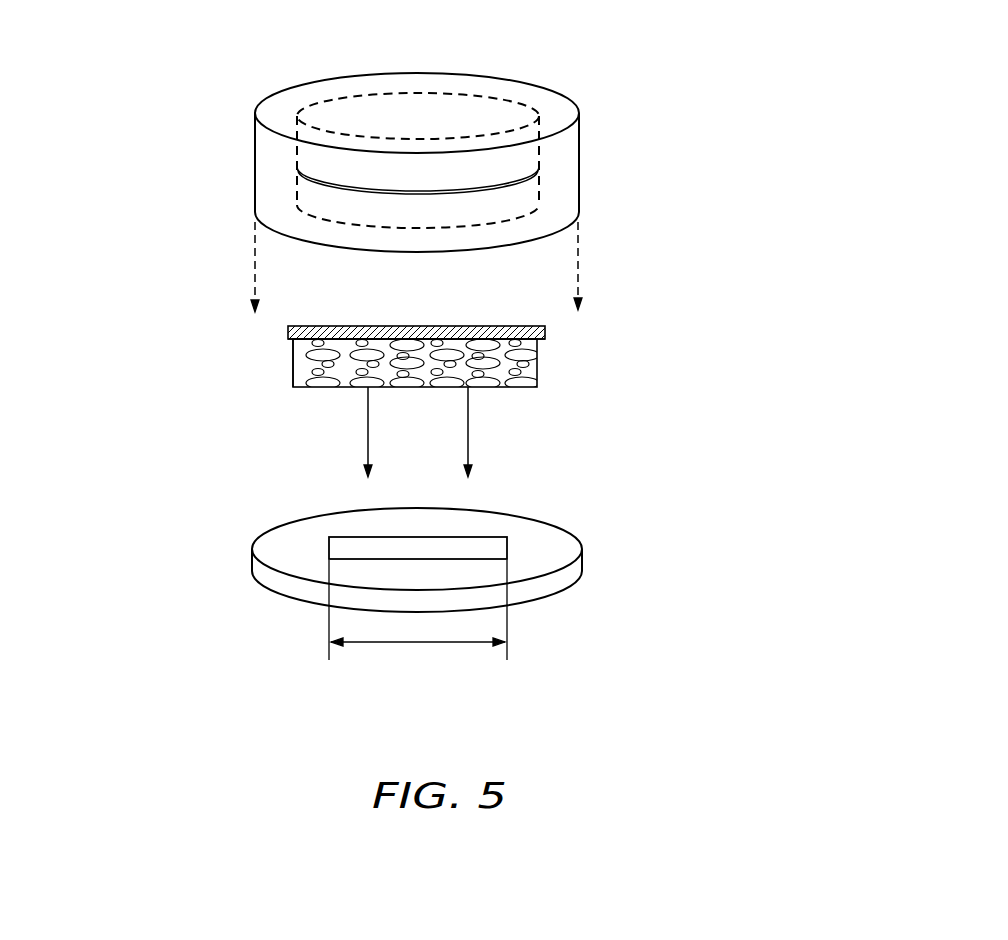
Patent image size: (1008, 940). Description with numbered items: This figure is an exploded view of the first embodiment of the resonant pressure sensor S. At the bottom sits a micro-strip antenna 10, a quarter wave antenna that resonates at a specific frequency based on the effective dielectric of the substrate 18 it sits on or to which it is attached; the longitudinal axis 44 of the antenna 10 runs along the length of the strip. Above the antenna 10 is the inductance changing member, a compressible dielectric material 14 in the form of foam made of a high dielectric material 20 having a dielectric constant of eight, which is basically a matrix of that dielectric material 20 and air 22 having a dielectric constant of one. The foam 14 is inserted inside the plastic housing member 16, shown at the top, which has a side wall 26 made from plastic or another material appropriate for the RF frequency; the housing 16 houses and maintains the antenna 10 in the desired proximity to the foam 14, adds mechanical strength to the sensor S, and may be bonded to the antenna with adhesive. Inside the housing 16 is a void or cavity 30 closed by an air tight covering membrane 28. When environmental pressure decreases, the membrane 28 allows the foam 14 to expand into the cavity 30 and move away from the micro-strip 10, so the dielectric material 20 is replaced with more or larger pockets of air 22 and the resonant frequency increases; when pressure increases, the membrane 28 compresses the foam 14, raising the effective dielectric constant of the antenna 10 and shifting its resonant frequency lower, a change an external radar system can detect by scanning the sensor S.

The antenna member 10 is at (497, 550).
The compressible dielectric material 14 is at (537, 368).
The housing member 16 is at (560, 163).
The substrate 18 is at (292, 533).
The dielectric material 20 is at (293, 370).
The air 22 is at (415, 326).
The side wall 26 is at (268, 168).
The covering membrane 28 is at (545, 332).
The cavity 30 is at (460, 110).
The longitudinal axis 44 is at (398, 643).
The pressure sensor S is at (630, 248).